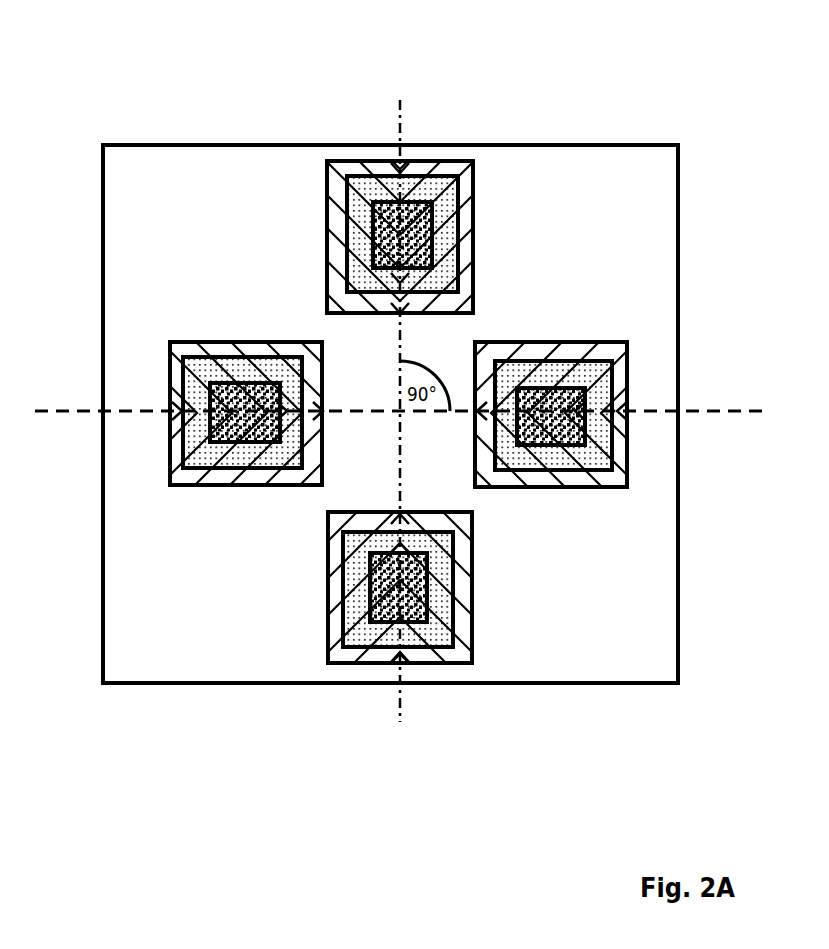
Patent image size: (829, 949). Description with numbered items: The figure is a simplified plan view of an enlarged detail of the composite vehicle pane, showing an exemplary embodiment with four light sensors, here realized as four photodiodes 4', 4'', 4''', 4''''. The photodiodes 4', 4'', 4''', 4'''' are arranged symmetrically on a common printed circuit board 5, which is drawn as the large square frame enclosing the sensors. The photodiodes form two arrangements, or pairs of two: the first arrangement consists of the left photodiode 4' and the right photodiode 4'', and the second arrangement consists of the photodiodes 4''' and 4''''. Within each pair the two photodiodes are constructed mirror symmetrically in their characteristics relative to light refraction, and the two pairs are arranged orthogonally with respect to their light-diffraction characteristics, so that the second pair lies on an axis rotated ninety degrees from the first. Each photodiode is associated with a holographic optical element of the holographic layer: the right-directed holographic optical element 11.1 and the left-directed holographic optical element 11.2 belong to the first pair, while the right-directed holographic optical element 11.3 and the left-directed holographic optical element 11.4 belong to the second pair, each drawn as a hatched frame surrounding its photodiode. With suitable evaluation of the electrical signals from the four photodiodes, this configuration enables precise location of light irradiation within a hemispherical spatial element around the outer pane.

The printed circuit board 5 is at (595, 144).
The right-directed holographic optical element 11.1 is at (218, 413).
The left-directed holographic optical element 11.2 is at (608, 405).
The right-directed holographic optical element 11.3 is at (400, 204).
The left-directed holographic optical element 11.4 is at (400, 660).
The light sensor 4' is at (222, 413).
The light sensor 4'' is at (608, 413).
The light sensor 4''' is at (400, 204).
The light sensor 4'''' is at (400, 660).